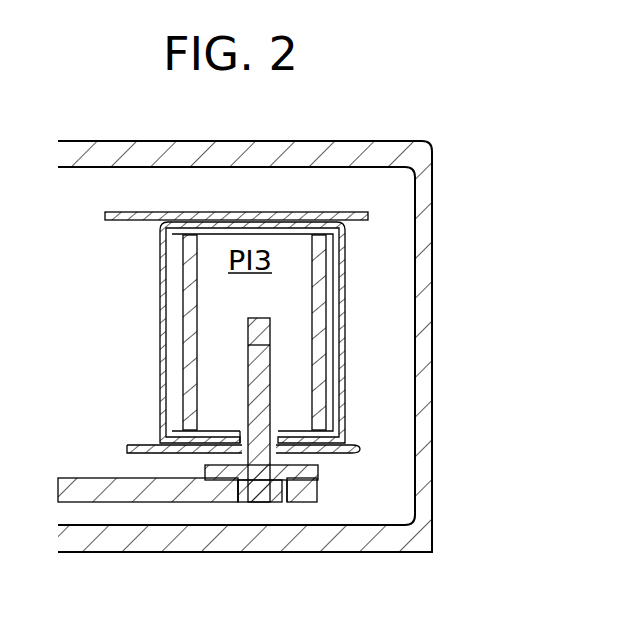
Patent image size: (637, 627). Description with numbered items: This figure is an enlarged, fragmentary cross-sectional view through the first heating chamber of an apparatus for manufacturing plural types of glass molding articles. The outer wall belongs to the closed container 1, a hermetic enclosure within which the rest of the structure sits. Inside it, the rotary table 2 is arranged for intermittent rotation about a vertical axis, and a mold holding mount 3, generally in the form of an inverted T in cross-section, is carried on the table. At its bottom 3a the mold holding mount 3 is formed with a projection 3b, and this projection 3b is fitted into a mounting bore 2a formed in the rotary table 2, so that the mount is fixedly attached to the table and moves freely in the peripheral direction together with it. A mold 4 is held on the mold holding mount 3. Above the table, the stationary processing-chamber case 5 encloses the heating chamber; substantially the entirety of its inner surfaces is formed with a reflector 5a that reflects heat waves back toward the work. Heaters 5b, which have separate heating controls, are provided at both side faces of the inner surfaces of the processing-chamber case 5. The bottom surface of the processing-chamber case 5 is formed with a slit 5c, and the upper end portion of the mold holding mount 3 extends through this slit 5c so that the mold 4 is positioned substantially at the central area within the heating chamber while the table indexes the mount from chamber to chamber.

The closed container 1 is at (432, 250).
The rotary table 2 is at (85, 478).
The mounting bore 2a is at (256, 502).
The mold holding mount 3 is at (270, 392).
The bottom 3a is at (318, 470).
The projection 3b is at (270, 502).
The mold 4 is at (270, 326).
The processing-chamber case 5 is at (368, 212).
The reflector 5a is at (346, 325).
The heaters 5b is at (183, 288).
The slit 5c is at (245, 432).